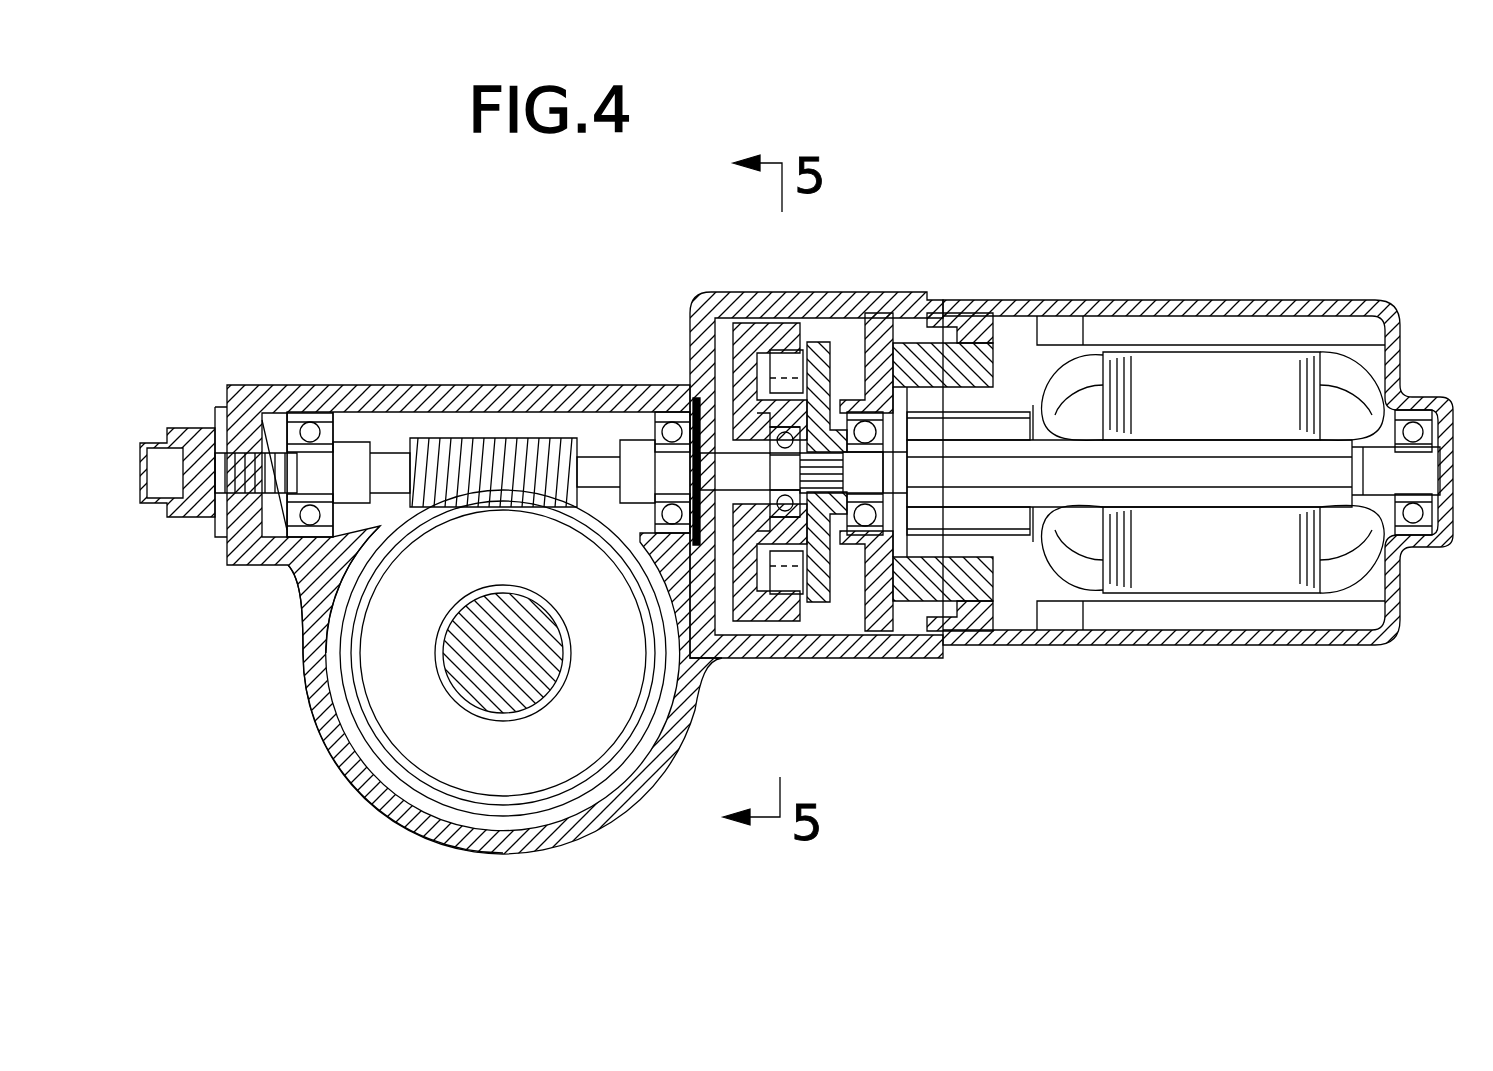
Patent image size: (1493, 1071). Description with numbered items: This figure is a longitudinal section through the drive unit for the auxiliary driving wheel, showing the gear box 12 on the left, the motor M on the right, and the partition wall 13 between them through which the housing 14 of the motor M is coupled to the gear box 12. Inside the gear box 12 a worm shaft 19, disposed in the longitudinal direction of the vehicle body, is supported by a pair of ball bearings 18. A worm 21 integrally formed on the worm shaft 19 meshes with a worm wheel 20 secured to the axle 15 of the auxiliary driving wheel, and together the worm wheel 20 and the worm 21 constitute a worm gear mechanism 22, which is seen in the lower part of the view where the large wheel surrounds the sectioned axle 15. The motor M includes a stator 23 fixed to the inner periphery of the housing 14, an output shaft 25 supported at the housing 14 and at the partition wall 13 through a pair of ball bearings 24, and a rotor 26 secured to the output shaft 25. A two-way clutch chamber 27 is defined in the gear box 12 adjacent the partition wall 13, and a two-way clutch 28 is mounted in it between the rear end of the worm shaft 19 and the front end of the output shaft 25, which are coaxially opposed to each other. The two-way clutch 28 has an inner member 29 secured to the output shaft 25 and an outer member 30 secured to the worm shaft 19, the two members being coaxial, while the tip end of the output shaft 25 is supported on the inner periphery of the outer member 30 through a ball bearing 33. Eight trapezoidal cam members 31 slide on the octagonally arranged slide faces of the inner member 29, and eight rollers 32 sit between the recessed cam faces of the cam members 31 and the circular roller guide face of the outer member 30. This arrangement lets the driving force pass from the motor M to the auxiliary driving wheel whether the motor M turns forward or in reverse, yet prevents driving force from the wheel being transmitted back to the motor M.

The gear box 12 is at (553, 392).
The partition wall 13 is at (897, 294).
The housing 14 is at (1127, 300).
The axle 15 is at (537, 672).
The ball bearings 18 is at (313, 412).
The worm shaft 19 is at (387, 453).
The worm wheel 20 is at (307, 699).
The worm 21 is at (313, 577).
The worm gear mechanism 22 is at (237, 647).
The stator 23 is at (1280, 322).
The ball bearings 24 is at (1410, 427).
The output shaft 25 is at (1185, 488).
The rotor 26 is at (1230, 563).
The two-way clutch chamber 27 is at (733, 660).
The two-way clutch 28 is at (817, 337).
The inner member 29 is at (818, 604).
The outer member 30 is at (750, 322).
The cam members 31 is at (790, 605).
The rollers 32 is at (783, 352).
The ball bearing 33 is at (740, 405).
The motor M is at (1210, 300).